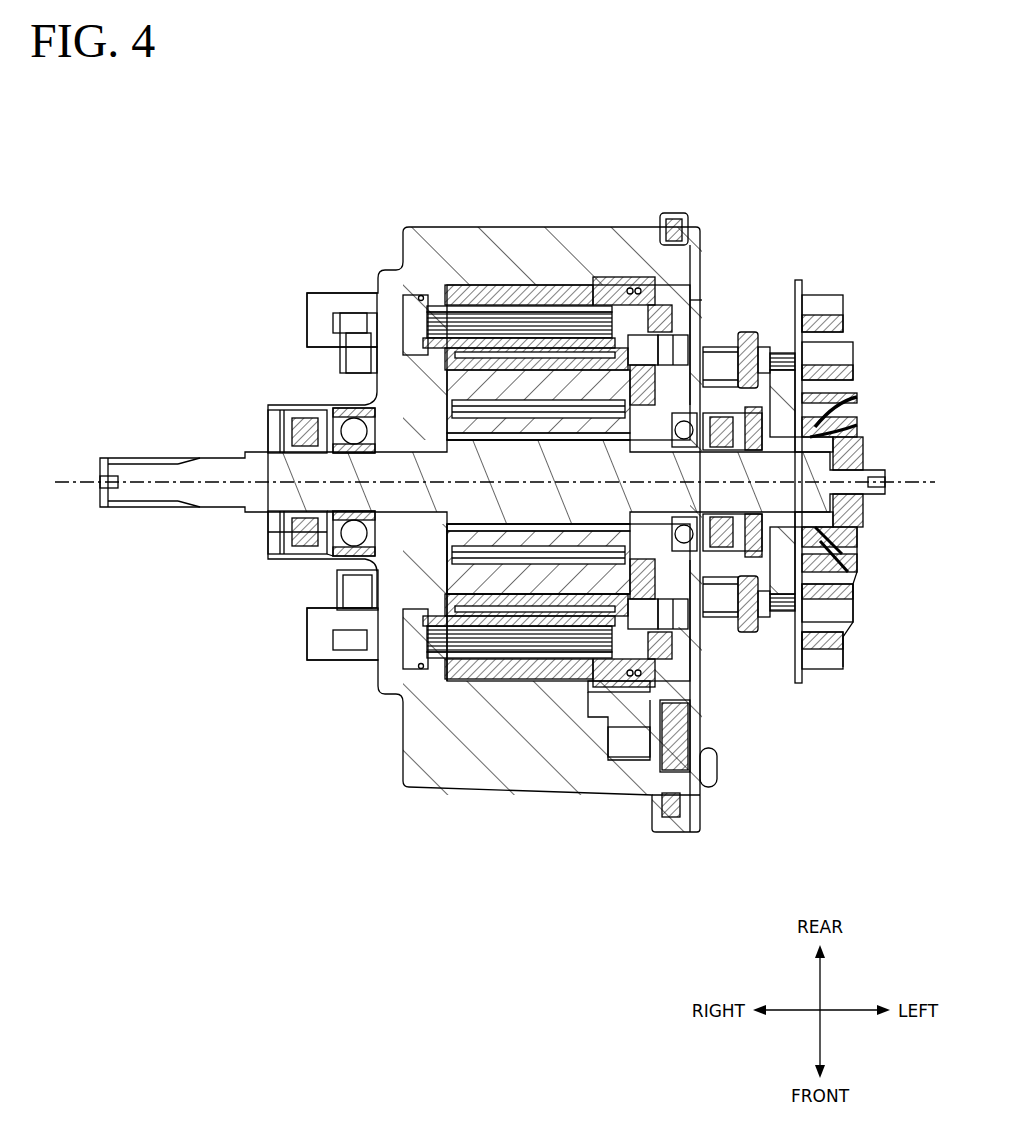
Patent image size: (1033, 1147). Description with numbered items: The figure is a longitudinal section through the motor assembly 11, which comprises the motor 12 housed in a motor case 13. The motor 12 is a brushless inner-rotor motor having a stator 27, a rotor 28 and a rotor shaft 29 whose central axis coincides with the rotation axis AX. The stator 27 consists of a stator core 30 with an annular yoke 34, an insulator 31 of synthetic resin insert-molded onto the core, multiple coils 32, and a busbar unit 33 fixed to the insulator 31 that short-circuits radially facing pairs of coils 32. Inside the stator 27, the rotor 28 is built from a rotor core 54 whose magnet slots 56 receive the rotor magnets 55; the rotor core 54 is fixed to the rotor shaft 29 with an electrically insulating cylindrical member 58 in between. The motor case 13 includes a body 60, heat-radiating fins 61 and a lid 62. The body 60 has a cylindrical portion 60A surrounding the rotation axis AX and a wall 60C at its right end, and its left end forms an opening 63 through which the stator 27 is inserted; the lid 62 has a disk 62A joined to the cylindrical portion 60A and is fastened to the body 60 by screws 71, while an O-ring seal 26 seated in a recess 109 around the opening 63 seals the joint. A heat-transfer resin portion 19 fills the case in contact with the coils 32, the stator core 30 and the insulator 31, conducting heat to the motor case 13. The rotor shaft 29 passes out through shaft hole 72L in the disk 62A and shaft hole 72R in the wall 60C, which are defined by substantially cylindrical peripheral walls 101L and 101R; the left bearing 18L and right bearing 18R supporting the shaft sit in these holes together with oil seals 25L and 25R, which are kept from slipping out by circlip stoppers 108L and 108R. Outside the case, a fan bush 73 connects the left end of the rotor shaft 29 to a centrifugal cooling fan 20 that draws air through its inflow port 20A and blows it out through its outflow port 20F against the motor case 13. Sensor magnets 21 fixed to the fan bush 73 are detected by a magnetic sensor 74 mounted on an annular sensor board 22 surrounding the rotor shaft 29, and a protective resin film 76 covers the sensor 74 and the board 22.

The motor assembly 11 is at (227, 197).
The motor case 13 is at (732, 112).
The body 60 is at (623, 226).
The lid 62 is at (680, 205).
The opening 63 is at (688, 236).
The disk 62A is at (703, 297).
The cylindrical portion 60A is at (392, 292).
The wall 60C is at (352, 308).
The rotor magnets 55 is at (416, 300).
The magnet slots 56 is at (478, 320).
The rotor shaft 29 is at (217, 455).
The rotation axis AX is at (74, 472).
The motor 12 is at (500, 290).
The stator 27 is at (522, 335).
The heat-radiating fins 61 is at (530, 302).
The stator core 30 is at (548, 355).
The insulator 31 is at (592, 360).
The coils 32 is at (490, 372).
The yoke 34 is at (570, 400).
The busbar unit 33 is at (612, 300).
The rotor 28 is at (470, 560).
The cylindrical member 58 is at (552, 620).
The rotor core 54 is at (470, 600).
The right bearing 18R is at (345, 430).
The left bearing 18L is at (700, 440).
The shaft hole 72R is at (265, 538).
The shaft hole 72L is at (840, 535).
The stopper 108R is at (272, 416).
The stopper 108L is at (848, 596).
The peripheral wall 101R is at (290, 545).
The peripheral wall 101L is at (710, 615).
The seal 25R is at (300, 565).
The seal 25L is at (712, 650).
The resin film 76 is at (748, 333).
The sensor magnets 21 is at (794, 350).
The sensor board 22 is at (770, 350).
The magnetic sensor 74 is at (791, 345).
The cooling fan 20 is at (848, 281).
The outflow port 20F is at (823, 275).
The inflow port 20A is at (858, 400).
The fan bush 73 is at (820, 306).
The heat-transfer resin portion 19 is at (662, 681).
The screw 71 is at (708, 790).
The seal 26 is at (672, 818).
The recess 109 is at (665, 792).